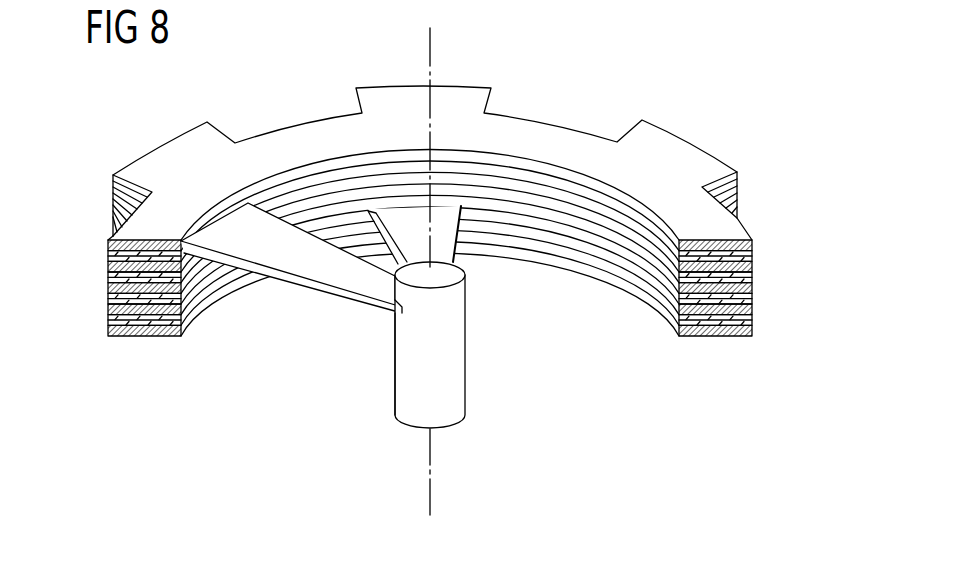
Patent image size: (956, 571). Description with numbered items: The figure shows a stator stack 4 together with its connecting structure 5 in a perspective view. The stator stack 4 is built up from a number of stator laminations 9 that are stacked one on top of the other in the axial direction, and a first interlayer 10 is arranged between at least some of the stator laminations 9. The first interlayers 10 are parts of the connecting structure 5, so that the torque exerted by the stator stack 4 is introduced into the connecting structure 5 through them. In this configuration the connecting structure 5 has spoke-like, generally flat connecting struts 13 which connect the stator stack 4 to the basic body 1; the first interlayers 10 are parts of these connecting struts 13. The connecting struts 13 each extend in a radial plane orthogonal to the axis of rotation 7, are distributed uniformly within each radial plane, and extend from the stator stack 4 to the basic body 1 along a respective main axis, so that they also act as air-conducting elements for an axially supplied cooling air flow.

The basic body 1 is at (450, 372).
The stator stack 4 is at (704, 98).
The connecting structure 5 is at (270, 318).
The axis of rotation 7 is at (430, 52).
The stator laminations 9 is at (108, 265).
The first interlayer 10 is at (752, 278).
The connecting struts 13 is at (218, 232).